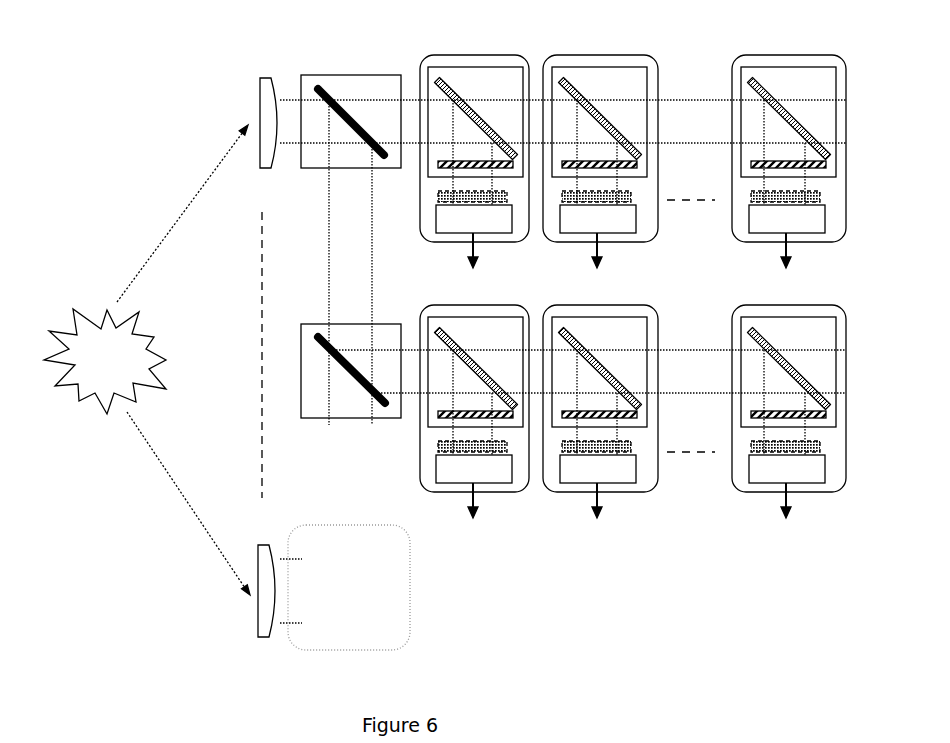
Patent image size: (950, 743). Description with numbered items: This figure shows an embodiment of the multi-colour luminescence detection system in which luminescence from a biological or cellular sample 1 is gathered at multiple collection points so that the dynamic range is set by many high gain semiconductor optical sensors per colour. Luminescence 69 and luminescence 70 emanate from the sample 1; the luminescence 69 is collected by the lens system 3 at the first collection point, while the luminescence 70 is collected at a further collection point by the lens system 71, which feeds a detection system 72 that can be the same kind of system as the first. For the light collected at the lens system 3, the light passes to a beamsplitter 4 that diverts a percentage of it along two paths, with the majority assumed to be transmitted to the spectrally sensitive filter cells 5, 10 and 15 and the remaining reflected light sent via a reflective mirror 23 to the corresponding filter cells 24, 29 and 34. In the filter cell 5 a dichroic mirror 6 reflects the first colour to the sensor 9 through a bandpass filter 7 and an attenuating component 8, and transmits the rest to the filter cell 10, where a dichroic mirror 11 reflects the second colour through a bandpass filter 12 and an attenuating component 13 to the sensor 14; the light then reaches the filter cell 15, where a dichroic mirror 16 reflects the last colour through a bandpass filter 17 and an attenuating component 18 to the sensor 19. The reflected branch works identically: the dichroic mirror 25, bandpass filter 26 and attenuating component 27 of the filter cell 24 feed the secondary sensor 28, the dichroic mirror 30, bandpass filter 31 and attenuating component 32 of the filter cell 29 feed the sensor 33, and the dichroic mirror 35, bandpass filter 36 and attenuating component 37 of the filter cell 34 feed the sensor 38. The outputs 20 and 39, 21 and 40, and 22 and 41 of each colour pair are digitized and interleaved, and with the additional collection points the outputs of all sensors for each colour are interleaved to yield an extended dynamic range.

The sample 1 is at (98, 348).
The lens system 3 is at (265, 82).
The beamsplitter 4 is at (330, 86).
The filter cell 5 is at (463, 155).
The dichroic mirror 6 is at (445, 84).
The bandpass filter 7 is at (440, 164).
The attenuating component 8 is at (440, 195).
The high gain semiconductor optical sensor 9 is at (474, 219).
The filter cell 10 is at (614, 155).
The dichroic mirror 11 is at (570, 84).
The bandpass filter 12 is at (638, 165).
The attenuating component 13 is at (633, 200).
The high gain semiconductor optical sensor 14 is at (598, 219).
The filter cell 15 is at (773, 155).
The dichroic mirror 16 is at (760, 84).
The bandpass filter 17 is at (750, 164).
The attenuating component 18 is at (752, 193).
The high gain semiconductor optical sensor 19 is at (787, 219).
The output 20 is at (483, 253).
The output 21 is at (608, 253).
The output 22 is at (797, 253).
The reflective mirror 23 is at (322, 347).
The filter cell 24 is at (461, 405).
The dichroic mirror 25 is at (445, 334).
The bandpass filter 26 is at (440, 414).
The attenuating component 27 is at (440, 445).
The high gain semiconductor optical sensor 28 is at (474, 469).
The filter cell 29 is at (614, 405).
The dichroic mirror 30 is at (570, 334).
The bandpass filter 31 is at (638, 415).
The attenuating component 32 is at (633, 450).
The high gain semiconductor optical sensor 33 is at (598, 469).
The filter cell 34 is at (773, 405).
The dichroic mirror 35 is at (760, 334).
The bandpass filter 36 is at (750, 414).
The attenuating component 37 is at (752, 443).
The high gain semiconductor optical sensor 38 is at (787, 469).
The output 39 is at (483, 503).
The output 40 is at (608, 503).
The output 41 is at (797, 503).
The luminescence 69 is at (182, 213).
The luminescence 70 is at (188, 503).
The lens system 71 is at (278, 580).
The detection system 72 is at (349, 587).